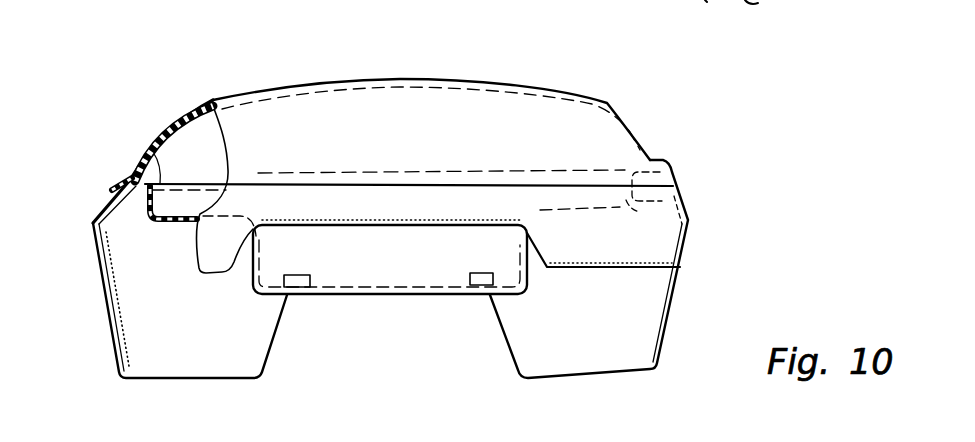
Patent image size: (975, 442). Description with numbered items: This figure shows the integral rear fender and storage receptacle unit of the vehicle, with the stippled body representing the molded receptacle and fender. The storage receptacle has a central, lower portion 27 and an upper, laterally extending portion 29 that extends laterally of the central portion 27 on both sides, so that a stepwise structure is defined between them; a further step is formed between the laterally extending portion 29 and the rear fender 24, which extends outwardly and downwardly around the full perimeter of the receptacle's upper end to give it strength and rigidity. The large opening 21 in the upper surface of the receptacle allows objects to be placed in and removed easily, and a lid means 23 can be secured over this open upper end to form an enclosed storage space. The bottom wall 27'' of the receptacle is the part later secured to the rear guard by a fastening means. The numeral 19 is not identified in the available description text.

The flange 19 is at (150, 154).
The opening 21 is at (298, 282).
The lid means 23 is at (308, 82).
The rear fender 24 is at (677, 299).
The central, lower portion 27 is at (390, 298).
The bottom wall 27'' is at (389, 295).
The upper, laterally extending portion 29 is at (580, 211).